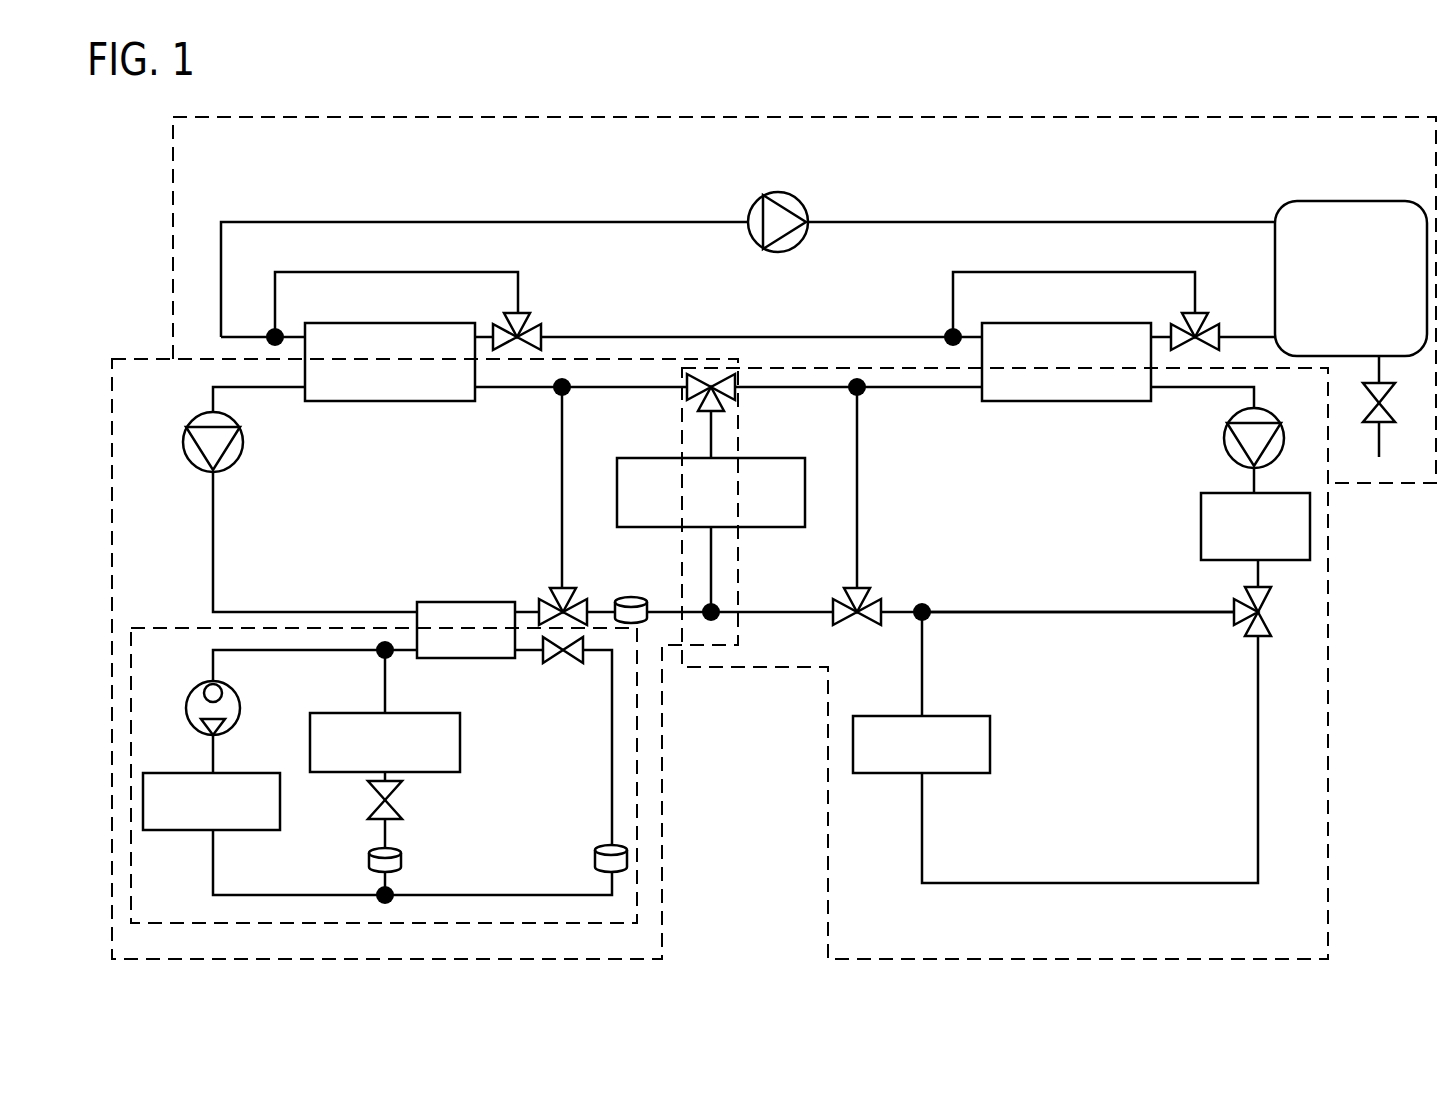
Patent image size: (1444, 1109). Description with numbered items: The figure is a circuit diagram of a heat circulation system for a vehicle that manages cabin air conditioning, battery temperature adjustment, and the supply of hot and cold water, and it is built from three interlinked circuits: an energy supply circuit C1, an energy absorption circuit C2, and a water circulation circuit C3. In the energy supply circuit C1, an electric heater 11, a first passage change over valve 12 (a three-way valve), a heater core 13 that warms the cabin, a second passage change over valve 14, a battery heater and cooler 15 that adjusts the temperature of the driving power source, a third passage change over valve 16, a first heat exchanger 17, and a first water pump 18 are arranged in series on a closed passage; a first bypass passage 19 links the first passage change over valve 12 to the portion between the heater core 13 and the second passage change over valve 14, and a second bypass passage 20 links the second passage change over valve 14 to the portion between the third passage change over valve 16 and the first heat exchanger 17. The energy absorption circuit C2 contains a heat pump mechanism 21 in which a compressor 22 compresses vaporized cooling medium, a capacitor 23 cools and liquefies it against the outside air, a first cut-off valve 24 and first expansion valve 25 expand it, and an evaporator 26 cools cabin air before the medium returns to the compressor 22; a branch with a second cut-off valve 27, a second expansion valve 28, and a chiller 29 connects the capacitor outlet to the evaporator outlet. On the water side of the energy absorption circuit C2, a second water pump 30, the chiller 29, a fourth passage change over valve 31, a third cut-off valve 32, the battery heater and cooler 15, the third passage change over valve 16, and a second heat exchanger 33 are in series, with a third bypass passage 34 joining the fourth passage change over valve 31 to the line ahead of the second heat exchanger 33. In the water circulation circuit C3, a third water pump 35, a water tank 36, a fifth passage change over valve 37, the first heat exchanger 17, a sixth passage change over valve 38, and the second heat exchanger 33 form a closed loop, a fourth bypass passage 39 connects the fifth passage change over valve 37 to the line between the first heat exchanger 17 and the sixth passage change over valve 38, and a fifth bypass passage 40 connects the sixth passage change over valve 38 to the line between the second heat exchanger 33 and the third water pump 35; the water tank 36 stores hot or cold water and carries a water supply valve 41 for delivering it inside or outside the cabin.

The electric heater 11 is at (1201, 525).
The first passage change over valve 12 is at (1270, 620).
The heater core 13 is at (970, 716).
The second passage change over valve 14 is at (878, 597).
The battery heater and cooler 15 is at (760, 458).
The third passage change over valve 16 is at (713, 377).
The first heat exchanger 17 is at (1030, 401).
The first water pump 18 is at (1225, 448).
The first bypass passage 19 is at (1068, 611).
The second bypass passage 20 is at (857, 478).
The heat pump mechanism 21 is at (170, 628).
The compressor 22 is at (238, 695).
The capacitor 23 is at (240, 773).
The first cut-off valve 24 is at (405, 860).
The first expansion valve 25 is at (398, 792).
The evaporator 26 is at (460, 727).
The second cut-off valve 27 is at (595, 858).
The second expansion valve 28 is at (563, 665).
The chiller 29 is at (430, 602).
The second water pump 30 is at (247, 455).
The fourth passage change over valve 31 is at (548, 600).
The third cut-off valve 32 is at (628, 597).
The second heat exchanger 33 is at (393, 401).
The third bypass passage 34 is at (562, 483).
The third water pump 35 is at (800, 205).
The water tank 36 is at (1330, 201).
The fifth passage change over valve 37 is at (1205, 325).
The sixth passage change over valve 38 is at (530, 325).
The fourth bypass passage 39 is at (1040, 272).
The fifth bypass passage 40 is at (390, 272).
The water supply valve 41 is at (1390, 410).
The energy supply circuit C1 is at (828, 780).
The energy absorption circuit C2 is at (662, 815).
The water circulation circuit C3 is at (980, 117).